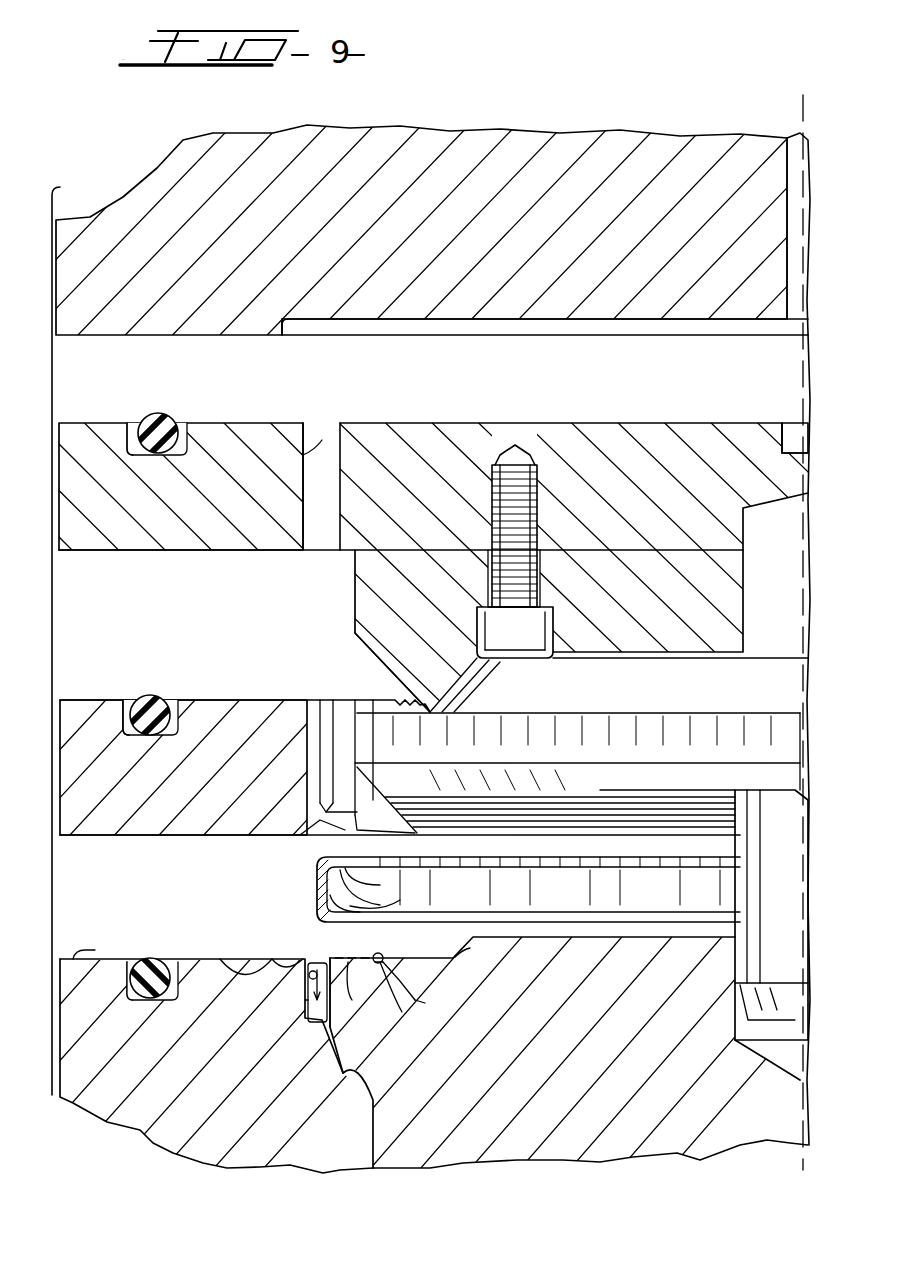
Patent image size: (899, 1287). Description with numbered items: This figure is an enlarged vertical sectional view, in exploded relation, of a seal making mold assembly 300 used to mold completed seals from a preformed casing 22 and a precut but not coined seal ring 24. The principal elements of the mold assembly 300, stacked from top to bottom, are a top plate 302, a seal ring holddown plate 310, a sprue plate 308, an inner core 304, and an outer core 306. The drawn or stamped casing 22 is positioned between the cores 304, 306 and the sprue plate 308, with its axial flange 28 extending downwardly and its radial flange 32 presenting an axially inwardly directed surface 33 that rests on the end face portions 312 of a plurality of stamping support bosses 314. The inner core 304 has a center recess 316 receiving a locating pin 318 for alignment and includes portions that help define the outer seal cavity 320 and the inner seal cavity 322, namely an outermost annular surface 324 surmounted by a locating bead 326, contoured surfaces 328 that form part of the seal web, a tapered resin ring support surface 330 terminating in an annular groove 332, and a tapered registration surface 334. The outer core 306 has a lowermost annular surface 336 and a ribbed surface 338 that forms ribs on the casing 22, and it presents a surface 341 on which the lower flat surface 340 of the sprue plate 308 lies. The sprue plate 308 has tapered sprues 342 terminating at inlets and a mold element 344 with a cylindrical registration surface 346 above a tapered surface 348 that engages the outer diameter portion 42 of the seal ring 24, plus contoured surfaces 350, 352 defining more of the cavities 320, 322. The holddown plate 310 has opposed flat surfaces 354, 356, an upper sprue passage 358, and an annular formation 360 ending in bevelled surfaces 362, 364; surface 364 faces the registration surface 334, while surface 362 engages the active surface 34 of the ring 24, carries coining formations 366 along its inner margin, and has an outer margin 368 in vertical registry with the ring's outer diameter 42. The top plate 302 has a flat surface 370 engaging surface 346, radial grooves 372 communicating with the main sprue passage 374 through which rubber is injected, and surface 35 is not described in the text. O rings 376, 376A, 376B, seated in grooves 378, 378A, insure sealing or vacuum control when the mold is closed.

The casing 22 is at (296, 889).
The seal ring 24 is at (667, 803).
The axial flange 28 is at (325, 910).
The radial flange 32 is at (374, 877).
The axially inwardly directed surface 33 is at (371, 890).
The active surface 34 is at (415, 790).
The spring member 35 is at (535, 895).
The outer diameter portion 42 is at (530, 790).
The mold assembly 300 is at (52, 600).
The top plate 302 is at (464, 212).
The inner core 304 is at (440, 1069).
The outer core 306 is at (204, 1087).
The sprue plate 308 is at (164, 790).
The seal ring holddown plate 310 is at (194, 512).
The end face portions 312 is at (350, 950).
The stamping support bosses 314 is at (395, 992).
The center recess 316 is at (740, 983).
The locating pin 318 is at (760, 827).
The outer seal cavity 320 is at (315, 1022).
The inner seal cavity 322 is at (401, 957).
The outermost annular surface 324 is at (308, 975).
The locating bead 326 is at (330, 958).
The contoured surfaces 328 is at (406, 998).
The resin ring support surface 330 is at (410, 982).
The annular groove 332 is at (425, 1003).
The tapered registration surface 334 is at (462, 955).
The lowermost annular surface 336 is at (307, 1005).
The ribbed surface 338 is at (240, 968).
The lower flat surface 340 is at (145, 835).
The surface 341 is at (88, 940).
The tapered sprue 342 is at (313, 702).
The mold element 344 is at (345, 758).
The cylindrical registration surface 346 is at (390, 758).
The tapered surface 348 is at (550, 850).
The contoured surface 350 is at (325, 836).
The contoured surface 352 is at (331, 839).
The flat surface 354 is at (200, 550).
The flat surface 356 is at (255, 423).
The upper sprue passage 358 is at (312, 455).
The annular formation 360 is at (403, 610).
The bevelled annular surface 362 is at (370, 655).
The bevelled annular surface 364 is at (455, 690).
The coining formations 366 is at (462, 708).
The outer margin 368 is at (395, 698).
The downwardly directed flat surface 370 is at (262, 335).
The radial grooves 372 is at (540, 335).
The main sprue passage 374 is at (790, 138).
The O ring 376 is at (150, 958).
The O ring 376A is at (158, 695).
The O ring 376B is at (160, 413).
The groove 378 is at (132, 440).
The groove 378A is at (128, 718).